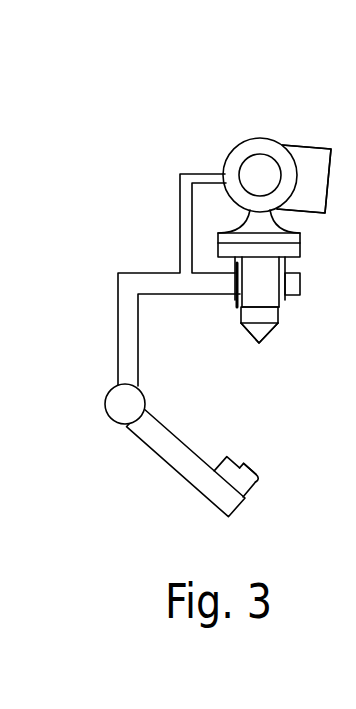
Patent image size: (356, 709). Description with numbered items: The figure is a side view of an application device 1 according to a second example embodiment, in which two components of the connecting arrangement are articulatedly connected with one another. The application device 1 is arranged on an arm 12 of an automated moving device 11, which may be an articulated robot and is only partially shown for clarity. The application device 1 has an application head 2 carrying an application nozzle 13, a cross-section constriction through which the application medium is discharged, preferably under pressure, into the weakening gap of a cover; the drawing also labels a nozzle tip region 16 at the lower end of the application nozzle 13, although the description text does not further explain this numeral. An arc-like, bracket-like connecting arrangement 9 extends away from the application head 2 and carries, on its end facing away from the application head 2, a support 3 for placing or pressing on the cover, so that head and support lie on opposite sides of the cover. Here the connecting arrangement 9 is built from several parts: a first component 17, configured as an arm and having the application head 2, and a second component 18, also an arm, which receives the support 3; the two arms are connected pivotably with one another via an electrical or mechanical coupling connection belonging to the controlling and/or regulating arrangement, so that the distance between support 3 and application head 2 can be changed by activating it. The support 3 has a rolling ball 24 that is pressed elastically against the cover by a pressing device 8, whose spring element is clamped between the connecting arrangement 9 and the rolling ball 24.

The application device 1 is at (108, 251).
The application head 2 is at (272, 253).
The support 3 is at (268, 465).
The pressing device 8 is at (257, 487).
The connecting arrangement 9 is at (99, 313).
The automated moving device 11 is at (312, 168).
The arm 12 is at (304, 179).
The application nozzle 13 is at (258, 332).
The nozzle tip 16 is at (260, 342).
The first component 17 is at (158, 280).
The second component 18 is at (163, 445).
The rolling ball 24 is at (253, 463).